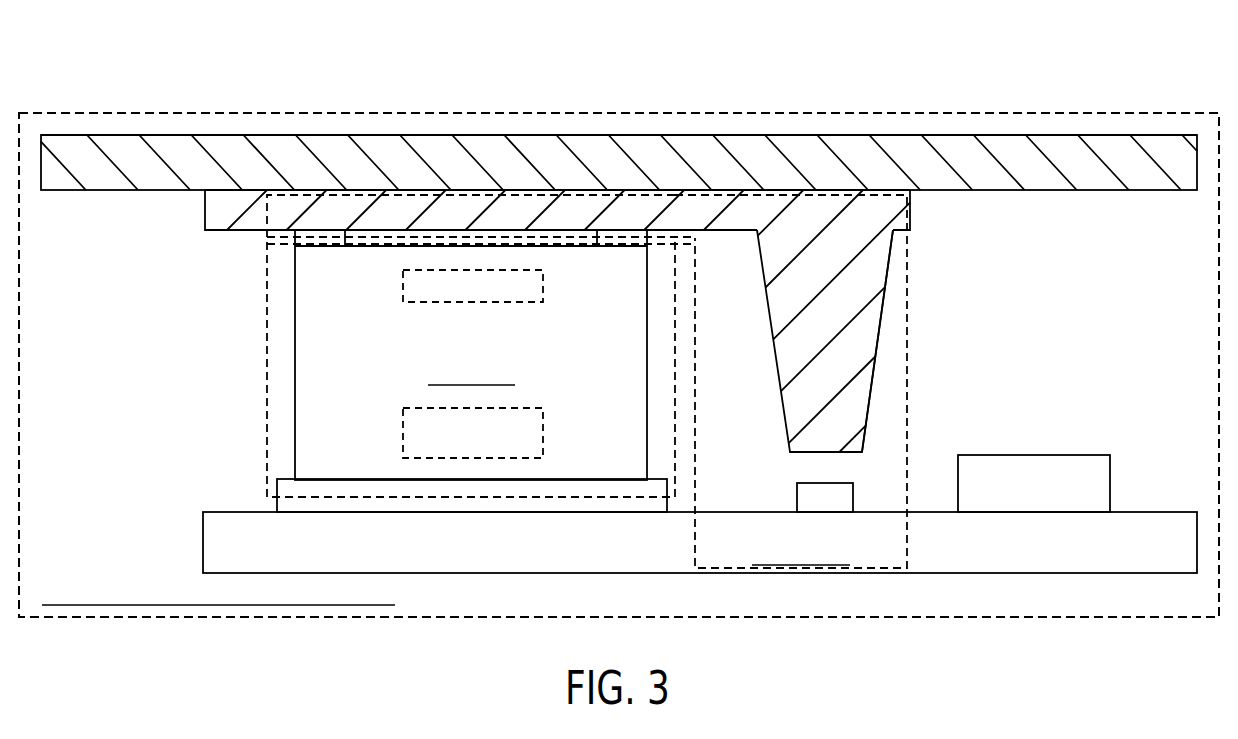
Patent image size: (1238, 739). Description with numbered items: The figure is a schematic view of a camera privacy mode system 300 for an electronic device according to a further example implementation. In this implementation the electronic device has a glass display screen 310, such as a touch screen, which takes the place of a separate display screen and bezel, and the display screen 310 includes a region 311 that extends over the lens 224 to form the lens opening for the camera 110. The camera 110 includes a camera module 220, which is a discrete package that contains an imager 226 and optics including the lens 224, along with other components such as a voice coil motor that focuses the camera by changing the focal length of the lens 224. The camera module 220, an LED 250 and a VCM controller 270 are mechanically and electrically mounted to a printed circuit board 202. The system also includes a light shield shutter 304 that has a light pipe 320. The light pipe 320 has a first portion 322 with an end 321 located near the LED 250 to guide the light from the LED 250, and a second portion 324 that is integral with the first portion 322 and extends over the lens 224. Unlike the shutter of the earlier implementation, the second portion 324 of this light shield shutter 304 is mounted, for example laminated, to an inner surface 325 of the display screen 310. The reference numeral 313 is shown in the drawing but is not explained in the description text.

The camera privacy mode system 300 is at (806, 69).
The glass display screen 310 is at (907, 137).
The region 311 is at (343, 133).
The aperture region of cover layer 313 is at (788, 192).
The second portion 324 is at (517, 210).
The inner surface 325 is at (422, 187).
The light pipe 320 is at (878, 342).
The end 321 is at (855, 405).
The first portion 322 is at (892, 255).
The light shield shutter 304 is at (908, 335).
The camera 110 is at (267, 315).
The camera module 220 is at (295, 363).
The lens 224 is at (403, 285).
The imager 226 is at (403, 428).
The light emitting diode 250 is at (797, 495).
The VCM controller 270 is at (1034, 455).
The printed circuit board 202 is at (1017, 575).